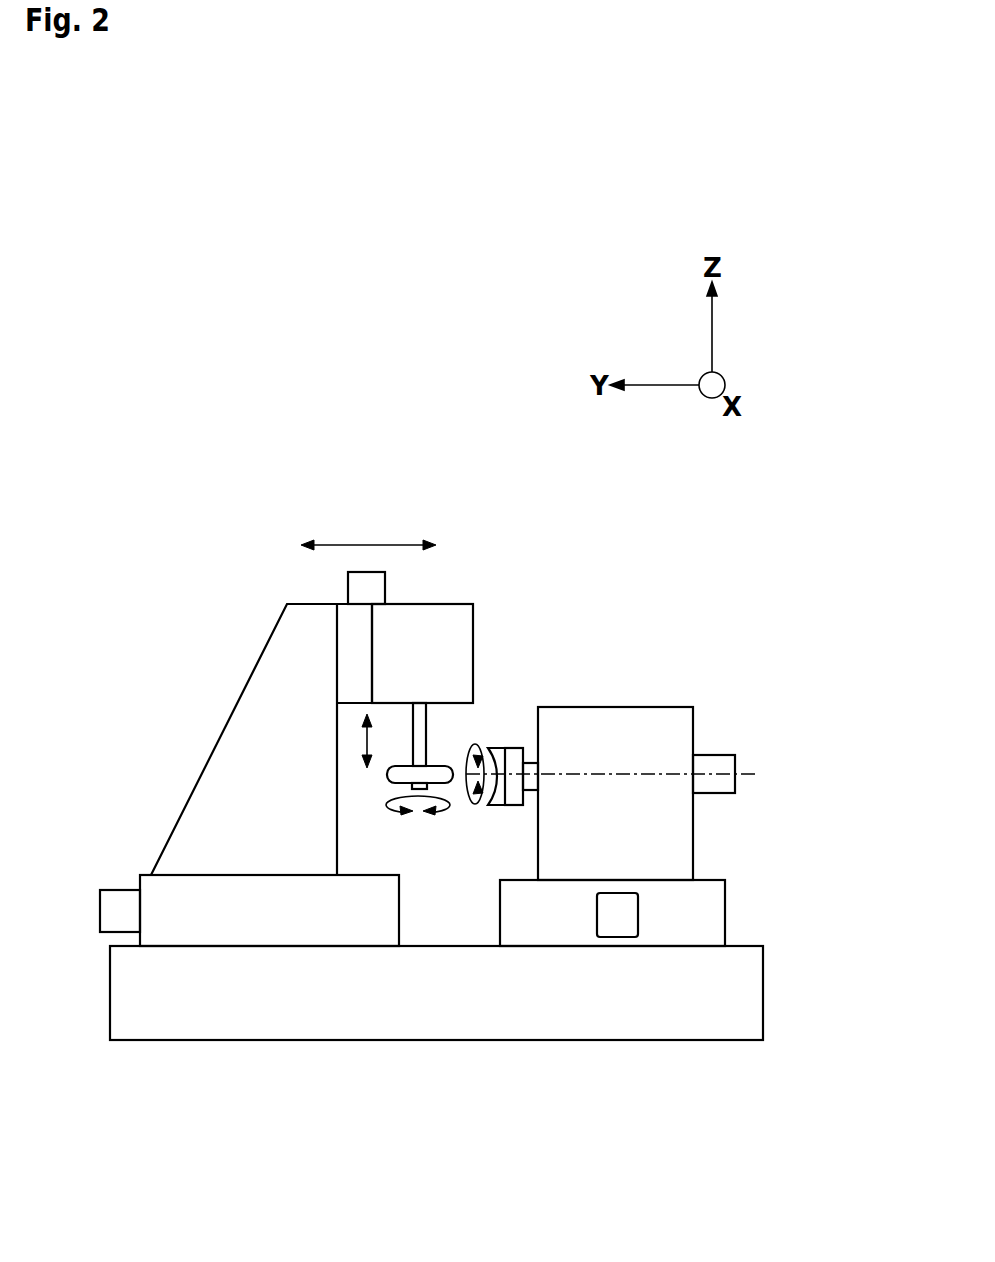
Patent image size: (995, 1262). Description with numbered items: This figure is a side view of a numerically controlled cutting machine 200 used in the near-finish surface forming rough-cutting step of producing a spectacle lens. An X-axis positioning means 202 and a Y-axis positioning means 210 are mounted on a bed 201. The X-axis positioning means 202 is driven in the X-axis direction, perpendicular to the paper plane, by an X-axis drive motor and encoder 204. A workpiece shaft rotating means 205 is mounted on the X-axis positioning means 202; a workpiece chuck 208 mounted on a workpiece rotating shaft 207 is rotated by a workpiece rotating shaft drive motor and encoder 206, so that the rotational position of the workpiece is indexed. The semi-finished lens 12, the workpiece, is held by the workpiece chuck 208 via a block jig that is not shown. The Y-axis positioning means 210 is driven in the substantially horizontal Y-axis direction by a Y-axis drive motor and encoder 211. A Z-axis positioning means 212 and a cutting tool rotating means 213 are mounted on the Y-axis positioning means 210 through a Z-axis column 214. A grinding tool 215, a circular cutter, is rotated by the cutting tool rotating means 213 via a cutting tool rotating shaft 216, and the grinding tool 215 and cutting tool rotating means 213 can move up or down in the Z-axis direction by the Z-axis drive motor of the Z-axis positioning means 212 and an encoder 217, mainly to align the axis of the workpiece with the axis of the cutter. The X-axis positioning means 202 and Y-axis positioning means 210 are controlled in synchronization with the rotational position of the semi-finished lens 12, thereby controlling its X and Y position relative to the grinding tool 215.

The numerically controlled cutting machine 200 is at (216, 598).
The bed 201 is at (301, 1030).
The X-axis positioning means 202 is at (717, 910).
The X-axis drive motor and encoder 204 is at (617, 922).
The workpiece shaft rotating means 205 is at (648, 707).
The workpiece rotating shaft drive motor and encoder 206 is at (727, 755).
The workpiece rotating shaft 207 is at (530, 762).
The workpiece chuck 208 is at (518, 747).
The semi-finished lens 12 is at (500, 808).
The Y-axis positioning means 210 is at (178, 888).
The Y-axis drive motor and encoder 211 is at (115, 890).
The Z-axis positioning means 212 is at (345, 617).
The cutting tool rotating means 213 is at (458, 602).
The Z-axis column 214 is at (236, 703).
The grinding tool 215 is at (387, 775).
The cutting tool rotating shaft 216 is at (427, 727).
The encoder 217 is at (387, 575).